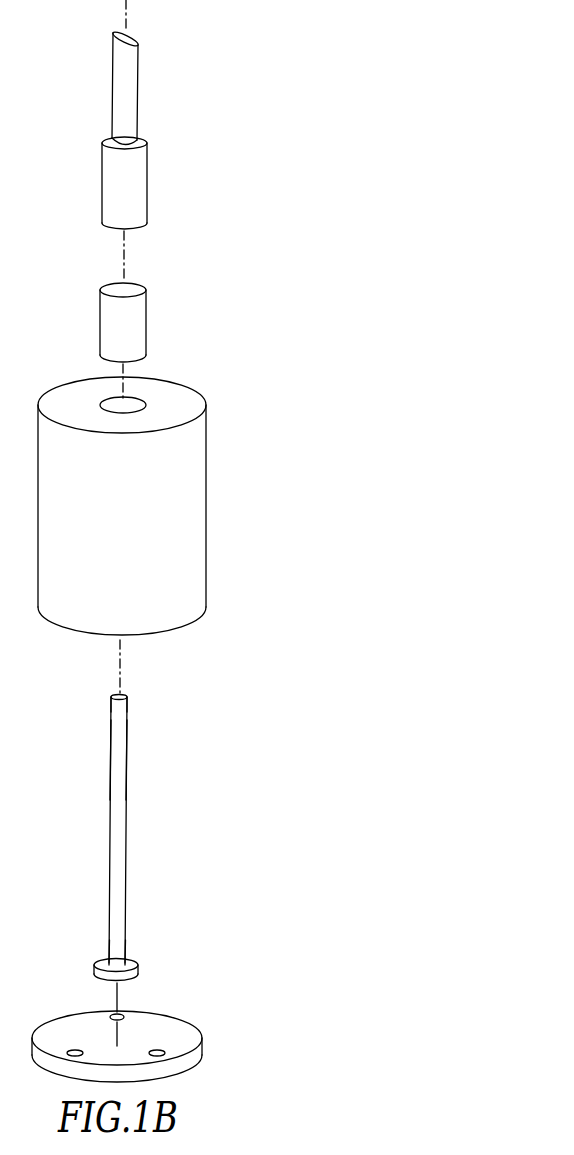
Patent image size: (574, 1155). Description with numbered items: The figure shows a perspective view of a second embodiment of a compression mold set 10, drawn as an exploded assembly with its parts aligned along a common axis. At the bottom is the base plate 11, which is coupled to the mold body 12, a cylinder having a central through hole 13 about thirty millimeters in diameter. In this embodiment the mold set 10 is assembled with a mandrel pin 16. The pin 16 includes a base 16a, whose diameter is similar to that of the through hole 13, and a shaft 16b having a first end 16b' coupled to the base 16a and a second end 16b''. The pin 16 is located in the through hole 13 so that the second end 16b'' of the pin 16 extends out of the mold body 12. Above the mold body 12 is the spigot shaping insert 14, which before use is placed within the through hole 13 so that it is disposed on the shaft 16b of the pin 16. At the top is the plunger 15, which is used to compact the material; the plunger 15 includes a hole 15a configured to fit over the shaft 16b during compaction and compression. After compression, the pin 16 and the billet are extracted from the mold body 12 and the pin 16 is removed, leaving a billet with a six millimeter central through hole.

The compression mold set 10 is at (222, 211).
The base plate 11 is at (202, 1055).
The mold body 12 is at (187, 463).
The through hole 13 is at (137, 402).
The spigot shaping insert 14 is at (135, 310).
The plunger 15 is at (140, 170).
The hole 15a is at (136, 229).
The mandrel pin 16 is at (117, 823).
The base 16a is at (139, 973).
The shaft 16b is at (147, 760).
The first end 16b' is at (149, 926).
The second end 16b'' is at (152, 688).